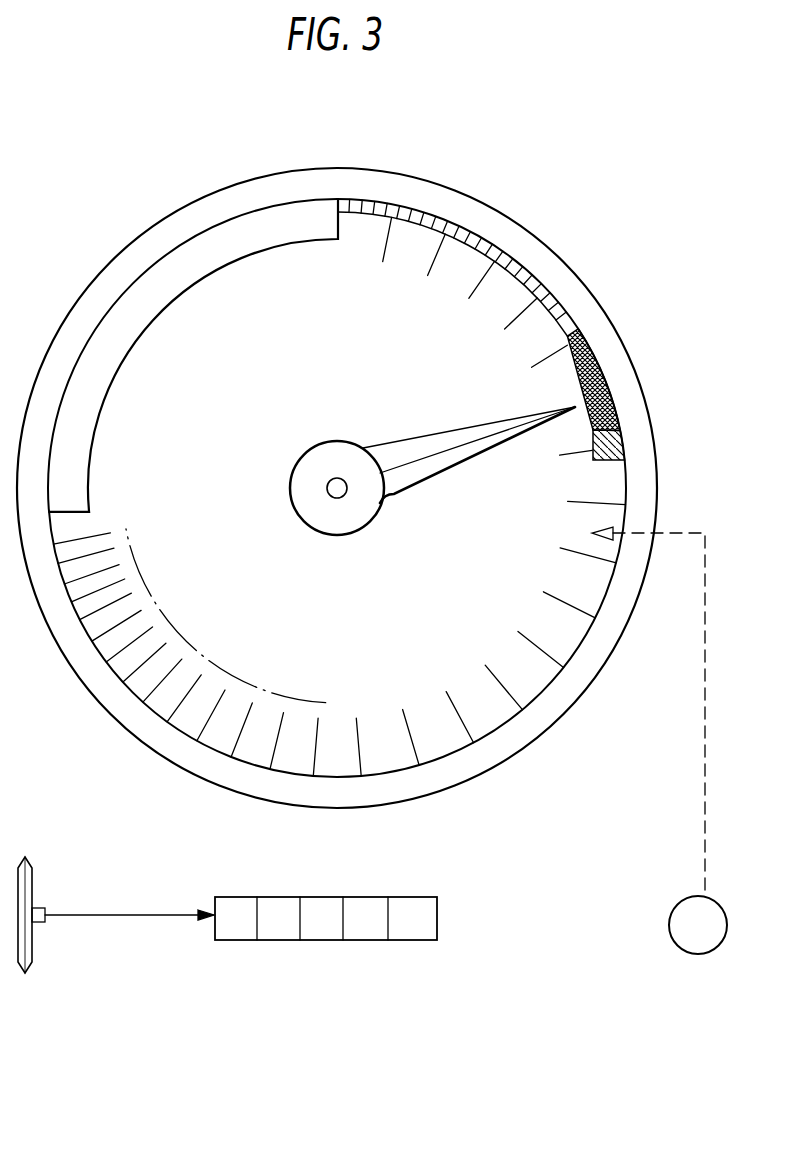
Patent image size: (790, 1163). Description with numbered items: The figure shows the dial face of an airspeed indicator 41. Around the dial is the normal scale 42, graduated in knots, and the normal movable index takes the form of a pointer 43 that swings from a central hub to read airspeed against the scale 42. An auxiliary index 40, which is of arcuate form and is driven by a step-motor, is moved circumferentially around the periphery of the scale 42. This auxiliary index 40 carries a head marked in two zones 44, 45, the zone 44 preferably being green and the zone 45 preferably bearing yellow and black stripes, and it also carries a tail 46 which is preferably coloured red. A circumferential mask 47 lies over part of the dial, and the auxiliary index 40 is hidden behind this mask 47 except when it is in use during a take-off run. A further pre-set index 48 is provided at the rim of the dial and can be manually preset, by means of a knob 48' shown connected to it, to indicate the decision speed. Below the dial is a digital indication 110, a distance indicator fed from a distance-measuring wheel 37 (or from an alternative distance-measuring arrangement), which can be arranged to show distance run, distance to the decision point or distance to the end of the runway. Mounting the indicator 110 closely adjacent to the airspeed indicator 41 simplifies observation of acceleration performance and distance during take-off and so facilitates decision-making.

The distance-measuring wheel 37 is at (28, 955).
The auxiliary index 40 is at (608, 461).
The airspeed indicator 41 is at (152, 750).
The scale 42 is at (483, 717).
The pointer 43 is at (420, 473).
The zone 44 is at (612, 440).
The zone 45 is at (595, 363).
The tail 46 is at (528, 271).
The circumferential mask 47 is at (157, 278).
The pre-set index 48 is at (648, 712).
The knob 48' is at (668, 925).
The digital indication 110 is at (368, 942).